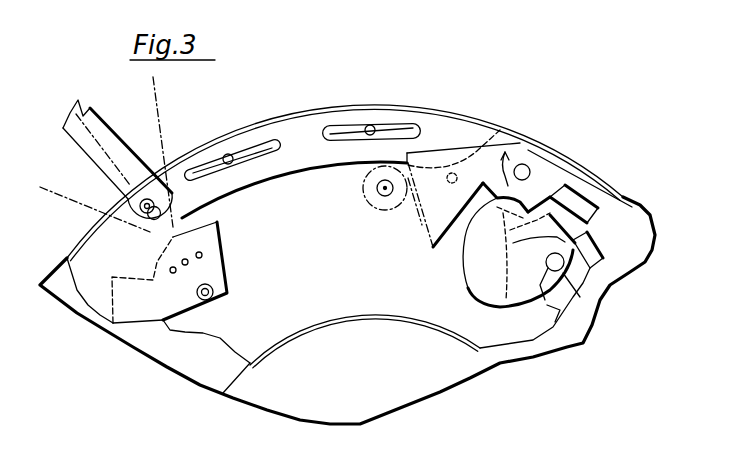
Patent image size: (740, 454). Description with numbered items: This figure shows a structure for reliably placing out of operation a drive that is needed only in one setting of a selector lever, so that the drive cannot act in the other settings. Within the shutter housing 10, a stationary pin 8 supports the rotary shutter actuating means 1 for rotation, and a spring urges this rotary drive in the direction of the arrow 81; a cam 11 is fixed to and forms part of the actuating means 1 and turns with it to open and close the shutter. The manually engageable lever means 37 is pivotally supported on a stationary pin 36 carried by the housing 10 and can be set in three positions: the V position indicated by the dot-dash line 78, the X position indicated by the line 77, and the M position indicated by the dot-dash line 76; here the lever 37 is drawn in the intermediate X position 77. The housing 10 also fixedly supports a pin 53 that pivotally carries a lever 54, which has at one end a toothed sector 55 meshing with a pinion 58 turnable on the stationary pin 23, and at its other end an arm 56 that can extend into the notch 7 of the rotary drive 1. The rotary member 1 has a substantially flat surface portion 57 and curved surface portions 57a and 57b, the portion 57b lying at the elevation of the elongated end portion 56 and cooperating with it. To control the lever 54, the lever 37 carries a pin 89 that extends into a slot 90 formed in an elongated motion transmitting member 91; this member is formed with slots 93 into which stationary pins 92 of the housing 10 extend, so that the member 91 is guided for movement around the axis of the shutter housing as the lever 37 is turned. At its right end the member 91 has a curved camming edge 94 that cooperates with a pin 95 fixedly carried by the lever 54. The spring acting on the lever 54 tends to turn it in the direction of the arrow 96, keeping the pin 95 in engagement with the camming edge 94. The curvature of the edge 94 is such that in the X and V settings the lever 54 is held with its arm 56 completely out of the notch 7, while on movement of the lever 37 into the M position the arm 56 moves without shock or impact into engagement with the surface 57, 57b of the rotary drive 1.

The rotary shutter actuating means 1 is at (548, 312).
The notch 7 is at (590, 260).
The stationary pin 8 is at (568, 282).
The shutter housing 10 is at (614, 200).
The cam 11 is at (507, 300).
The stationary pin 23 is at (377, 188).
The stationary pin 36 is at (207, 299).
The manually engageable lever means 37 is at (112, 137).
The pin 53 is at (530, 168).
The lever 54 is at (528, 150).
The toothed sector 55 is at (422, 225).
The arm 56 is at (578, 192).
The flat surface portion 57 is at (522, 239).
The curved surface portion 57a is at (550, 213).
The curved surface portion 57b is at (533, 218).
The pinion 58 is at (368, 206).
The dot-dash line 76 is at (68, 192).
The dot-dash line 77 is at (96, 136).
The dot-dash line 78 is at (170, 148).
The arrow 81 is at (530, 255).
The pin 89 is at (150, 215).
The slot 90 is at (163, 247).
The elongated motion transmitting member 91 is at (310, 163).
The stationary pins 92 is at (229, 164).
The slots 93 is at (272, 152).
The curved camming edge 94 is at (480, 132).
The pin 95 is at (448, 183).
The arrow 96 is at (505, 150).